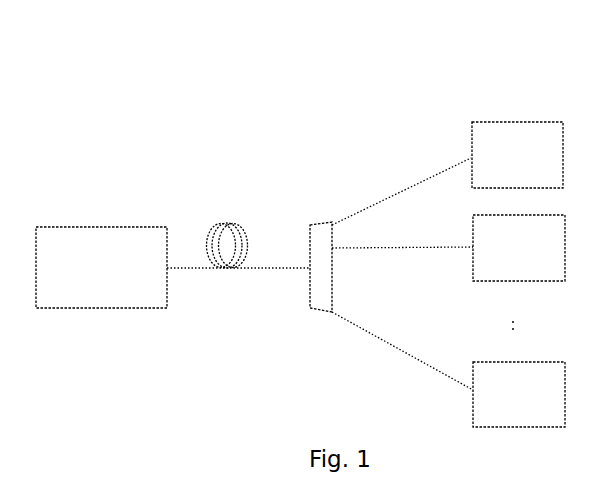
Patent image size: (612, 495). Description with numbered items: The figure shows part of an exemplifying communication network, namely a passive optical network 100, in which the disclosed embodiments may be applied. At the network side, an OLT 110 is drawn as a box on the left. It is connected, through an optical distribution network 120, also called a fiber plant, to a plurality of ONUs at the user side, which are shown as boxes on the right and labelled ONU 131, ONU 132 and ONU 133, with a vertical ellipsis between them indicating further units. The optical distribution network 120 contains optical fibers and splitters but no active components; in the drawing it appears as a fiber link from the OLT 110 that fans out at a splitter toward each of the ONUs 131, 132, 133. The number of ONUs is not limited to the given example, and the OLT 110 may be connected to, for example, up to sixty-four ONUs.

The passive optical network 100 is at (487, 82).
The OLT 110 is at (101, 267).
The optical distribution network 120 is at (310, 308).
The ONU 131 is at (517, 155).
The ONU 132 is at (519, 248).
The ONU 133 is at (519, 394).